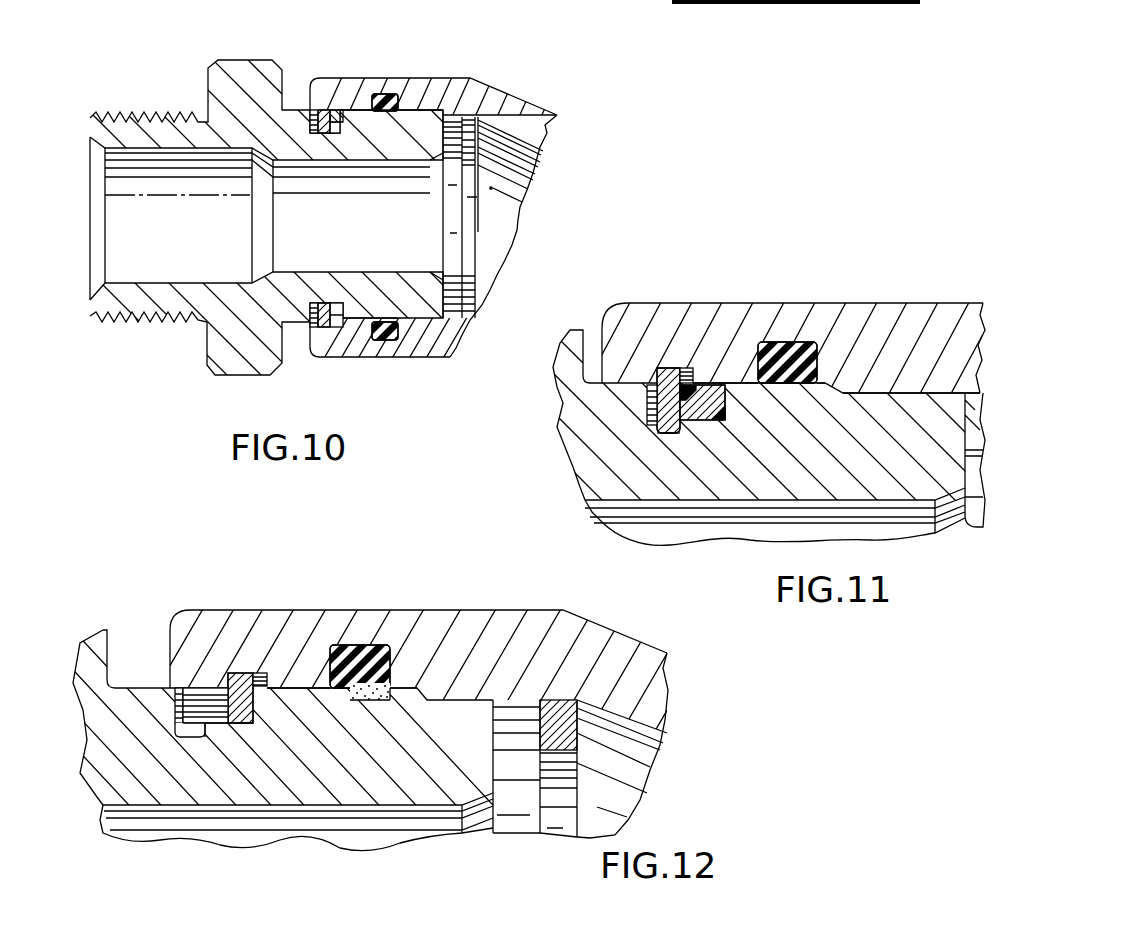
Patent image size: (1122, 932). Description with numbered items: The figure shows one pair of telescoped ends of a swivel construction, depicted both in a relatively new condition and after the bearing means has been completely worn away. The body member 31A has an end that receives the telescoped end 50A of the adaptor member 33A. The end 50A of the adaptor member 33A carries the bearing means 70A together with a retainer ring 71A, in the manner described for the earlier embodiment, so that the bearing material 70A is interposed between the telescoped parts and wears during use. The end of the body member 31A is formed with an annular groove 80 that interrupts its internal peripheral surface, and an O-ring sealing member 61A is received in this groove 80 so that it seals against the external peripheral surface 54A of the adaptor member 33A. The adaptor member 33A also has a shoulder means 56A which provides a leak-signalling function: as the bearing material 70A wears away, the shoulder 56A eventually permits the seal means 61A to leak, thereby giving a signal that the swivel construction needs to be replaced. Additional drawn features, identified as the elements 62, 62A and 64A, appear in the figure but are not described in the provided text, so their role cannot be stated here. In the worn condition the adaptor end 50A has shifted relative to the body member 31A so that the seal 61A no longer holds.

In FIG. 10, the body member 31A is at (545, 123).
In FIG. 11, the body member 31A is at (953, 312).
In FIG. 12, the body member 31A is at (643, 690).
In FIG. 10, the adaptor member 33A is at (93, 136).
In FIG. 11, the adaptor member 33A is at (562, 430).
In FIG. 12, the adaptor member 33A is at (93, 650).
In FIG. 10, the end of adaptor member 50A is at (430, 130).
In FIG. 11, the end of adaptor member 50A is at (900, 403).
In FIG. 12, the end of adaptor member 50A is at (412, 672).
In FIG. 10, the external peripheral surface 54A is at (362, 327).
In FIG. 11, the external peripheral surface 54A is at (733, 383).
In FIG. 12, the external peripheral surface 54A is at (300, 690).
In FIG. 10, the shoulder means 56A is at (392, 118).
In FIG. 11, the shoulder means 56A is at (800, 420).
In FIG. 12, the shoulder means 56A is at (352, 695).
In FIG. 10, the O-ring sealing member 61A is at (382, 323).
In FIG. 11, the O-ring sealing member 61A is at (802, 440).
In FIG. 12, the O-ring sealing member 61A is at (383, 660).
In FIG. 12, the thread 62 is at (170, 720).
In FIG. 11, the thread 62A is at (662, 427).
In FIG. 10, the locking element 64A is at (340, 120).
In FIG. 11, the locking element 64A is at (703, 402).
In FIG. 12, the locking element 64A is at (244, 720).
In FIG. 11, the bearing means 70A is at (703, 387).
In FIG. 10, the retainer ring 71A is at (333, 110).
In FIG. 11, the retainer ring 71A is at (663, 373).
In FIG. 12, the retainer ring 71A is at (243, 673).
In FIG. 10, the annular groove 80 is at (398, 95).
In FIG. 11, the annular groove 80 is at (782, 340).
In FIG. 12, the annular groove 80 is at (347, 647).